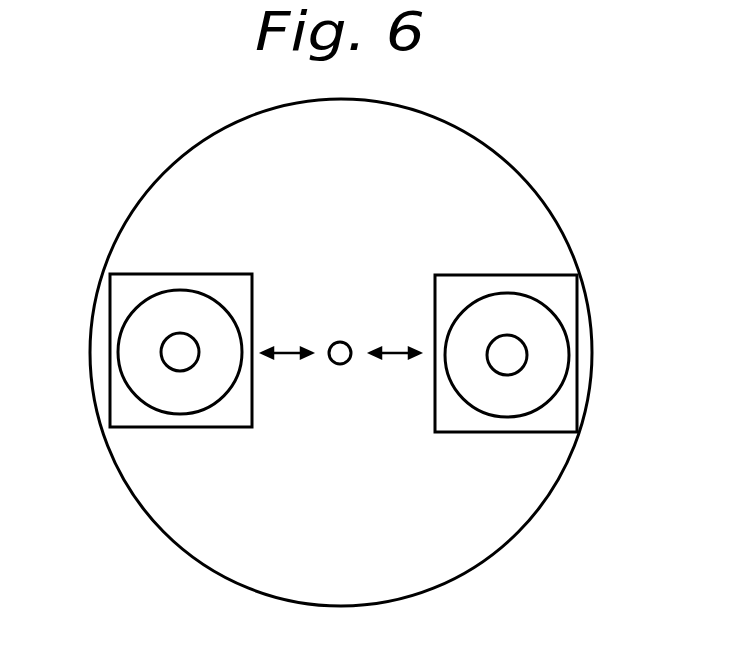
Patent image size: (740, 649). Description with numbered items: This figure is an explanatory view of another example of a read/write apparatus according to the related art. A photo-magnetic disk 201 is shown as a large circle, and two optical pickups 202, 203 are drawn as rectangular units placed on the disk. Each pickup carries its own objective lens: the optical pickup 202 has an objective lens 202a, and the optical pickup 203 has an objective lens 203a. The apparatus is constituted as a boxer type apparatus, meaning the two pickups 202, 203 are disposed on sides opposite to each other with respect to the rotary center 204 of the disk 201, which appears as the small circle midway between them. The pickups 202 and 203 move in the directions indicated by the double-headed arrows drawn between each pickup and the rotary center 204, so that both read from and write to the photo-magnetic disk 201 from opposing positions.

The photo-magnetic disk 201 is at (498, 175).
The optical pickup 202 is at (553, 337).
The objective lens 202a is at (517, 362).
The optical pickup 203 is at (130, 328).
The objective lens 203a is at (170, 360).
The rotary center 204 is at (342, 342).